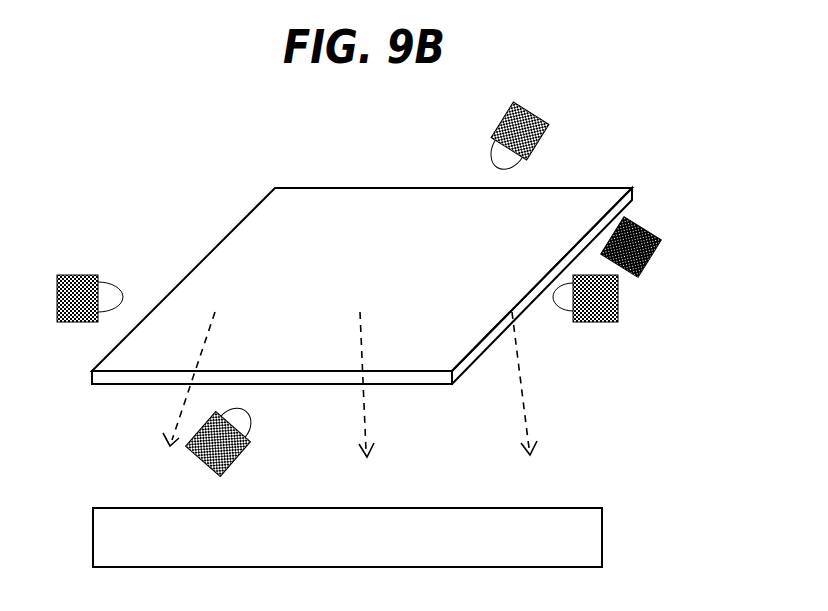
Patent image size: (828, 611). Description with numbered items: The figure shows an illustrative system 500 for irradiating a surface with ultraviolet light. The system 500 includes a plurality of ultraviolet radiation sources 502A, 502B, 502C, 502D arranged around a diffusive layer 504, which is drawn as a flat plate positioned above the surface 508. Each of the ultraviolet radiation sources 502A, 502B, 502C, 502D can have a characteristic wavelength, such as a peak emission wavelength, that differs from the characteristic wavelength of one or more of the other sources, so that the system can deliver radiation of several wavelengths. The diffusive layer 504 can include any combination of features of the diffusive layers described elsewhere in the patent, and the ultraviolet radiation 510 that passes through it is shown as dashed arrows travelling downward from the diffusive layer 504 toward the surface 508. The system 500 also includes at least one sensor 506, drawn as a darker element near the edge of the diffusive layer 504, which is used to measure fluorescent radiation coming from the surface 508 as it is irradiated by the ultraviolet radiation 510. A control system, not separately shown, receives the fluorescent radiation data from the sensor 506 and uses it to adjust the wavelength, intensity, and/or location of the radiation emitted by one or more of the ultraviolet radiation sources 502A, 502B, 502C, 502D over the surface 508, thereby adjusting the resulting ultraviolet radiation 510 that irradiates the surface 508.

The system 500 is at (106, 205).
The ultraviolet radiation source 502A is at (60, 313).
The ultraviolet radiation source 502B is at (540, 130).
The ultraviolet radiation source 502C is at (613, 322).
The ultraviolet radiation source 502D is at (235, 458).
The diffusive layer 504 is at (248, 236).
The sensor 506 is at (653, 248).
The surface 508 is at (568, 553).
The ultraviolet radiation 510 is at (367, 403).